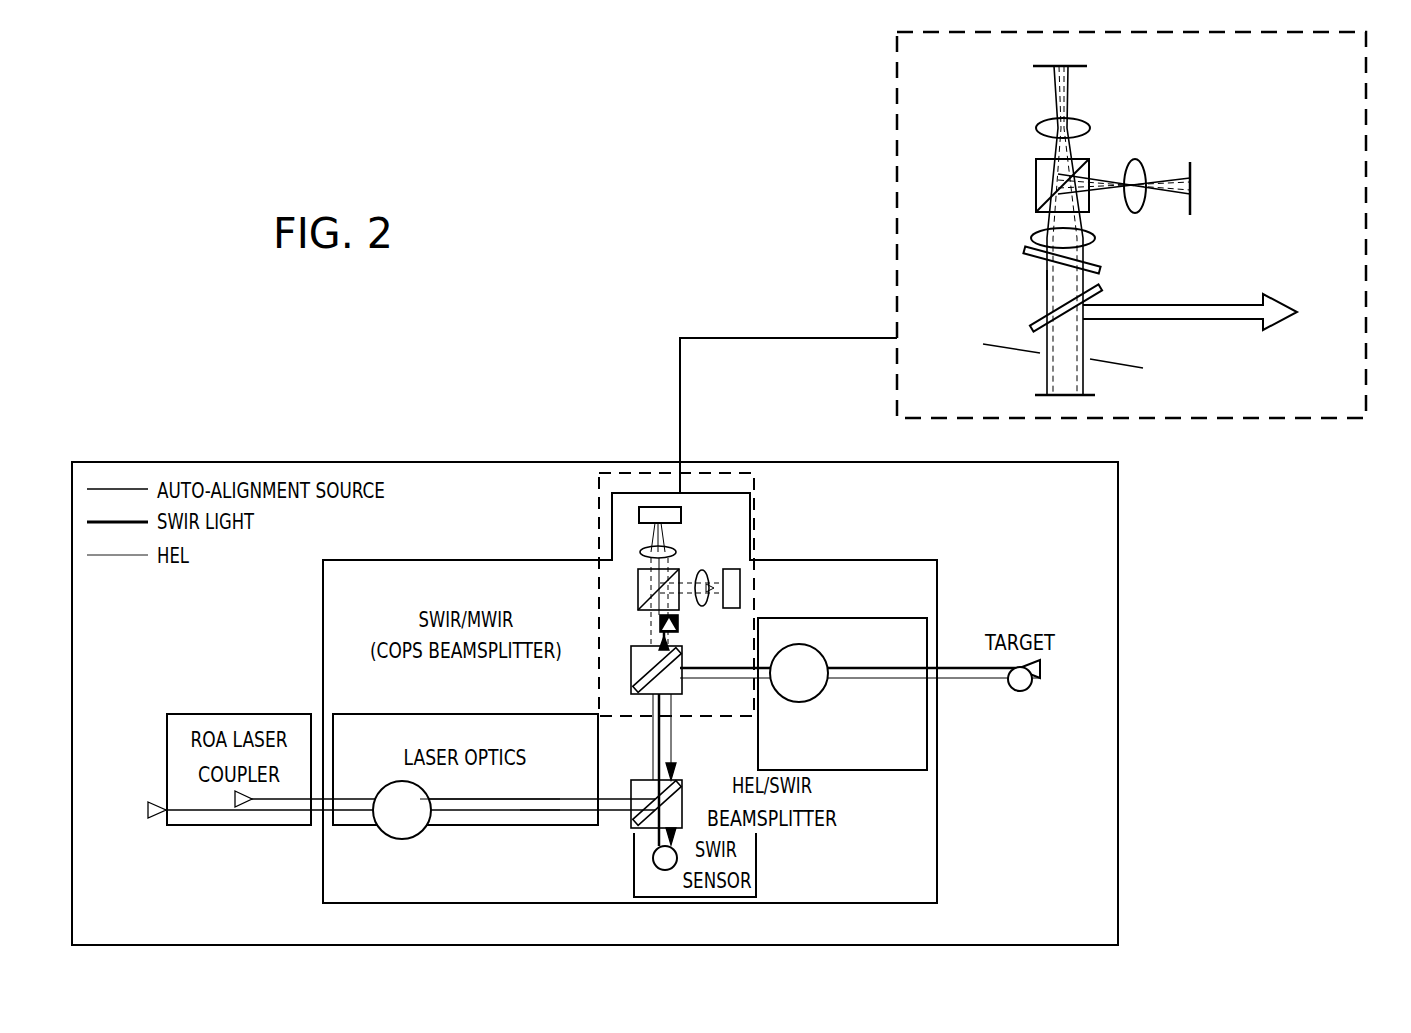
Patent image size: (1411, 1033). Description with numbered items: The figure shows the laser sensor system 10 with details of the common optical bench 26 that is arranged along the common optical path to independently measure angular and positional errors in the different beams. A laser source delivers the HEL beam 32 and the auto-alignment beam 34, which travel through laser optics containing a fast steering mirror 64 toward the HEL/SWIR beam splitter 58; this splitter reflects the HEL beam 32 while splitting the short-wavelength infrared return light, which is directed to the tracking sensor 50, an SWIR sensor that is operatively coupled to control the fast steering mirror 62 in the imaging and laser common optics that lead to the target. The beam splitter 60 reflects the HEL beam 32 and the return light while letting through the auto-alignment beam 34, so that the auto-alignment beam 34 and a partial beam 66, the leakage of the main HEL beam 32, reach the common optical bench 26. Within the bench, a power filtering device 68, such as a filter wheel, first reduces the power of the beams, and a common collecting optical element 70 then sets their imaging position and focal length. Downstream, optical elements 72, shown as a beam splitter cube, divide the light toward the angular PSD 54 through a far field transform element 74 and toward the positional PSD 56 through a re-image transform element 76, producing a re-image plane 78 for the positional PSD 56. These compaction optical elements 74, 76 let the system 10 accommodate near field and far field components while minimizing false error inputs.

The laser sensor system 10 is at (220, 436).
The common optical bench 26 is at (598, 503).
The HEL beam 32 is at (480, 812).
The auto-alignment beam 34 is at (540, 812).
The tracking sensor 50 is at (653, 858).
The angular PSD 54 is at (741, 580).
The positional PSD 56 is at (682, 514).
The HEL/SWIR beam splitter 58 is at (682, 782).
The beam splitter 60 is at (682, 655).
The fast steering mirror 62 is at (820, 652).
The fast steering mirror 64 is at (402, 840).
The partial beam 66 is at (1050, 281).
The power filtering device 68 is at (1027, 252).
The common collecting optical element 70 is at (1033, 238).
The optical elements 72 is at (1036, 186).
The far field transform element 74 is at (1142, 205).
The re-image transform element 76 is at (1090, 128).
The re-image plane 78 is at (1087, 396).